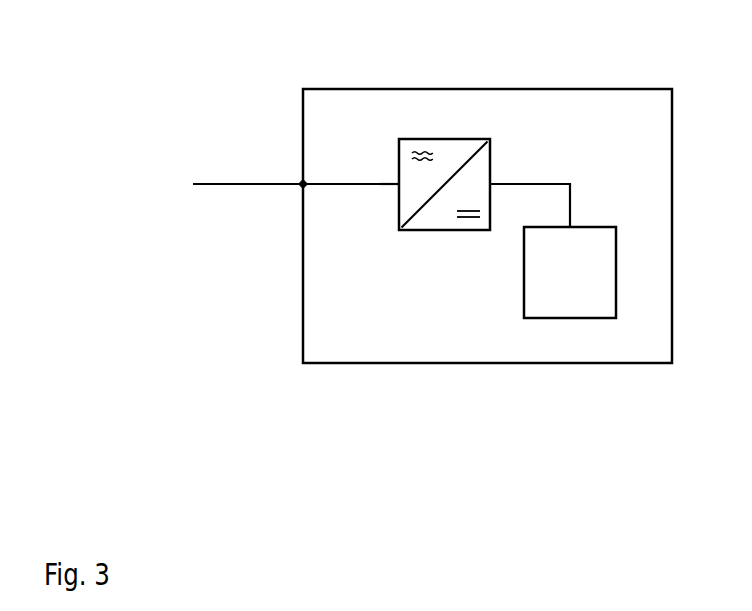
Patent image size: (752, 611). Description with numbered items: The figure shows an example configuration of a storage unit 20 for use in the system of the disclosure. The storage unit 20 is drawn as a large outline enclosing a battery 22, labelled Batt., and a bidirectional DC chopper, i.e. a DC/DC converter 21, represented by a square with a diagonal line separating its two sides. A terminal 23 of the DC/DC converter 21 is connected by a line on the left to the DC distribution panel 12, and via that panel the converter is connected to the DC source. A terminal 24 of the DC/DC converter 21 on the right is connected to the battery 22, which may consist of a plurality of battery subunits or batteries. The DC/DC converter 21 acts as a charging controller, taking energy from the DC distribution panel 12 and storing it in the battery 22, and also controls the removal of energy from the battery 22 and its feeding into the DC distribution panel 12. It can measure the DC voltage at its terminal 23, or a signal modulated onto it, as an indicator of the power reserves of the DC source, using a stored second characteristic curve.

The DC distribution panel 12 is at (263, 182).
The storage unit 20 is at (557, 87).
The DC/DC converter 21 is at (445, 138).
The battery 22 is at (615, 272).
The terminal 23 is at (398, 187).
The terminal 24 is at (495, 183).